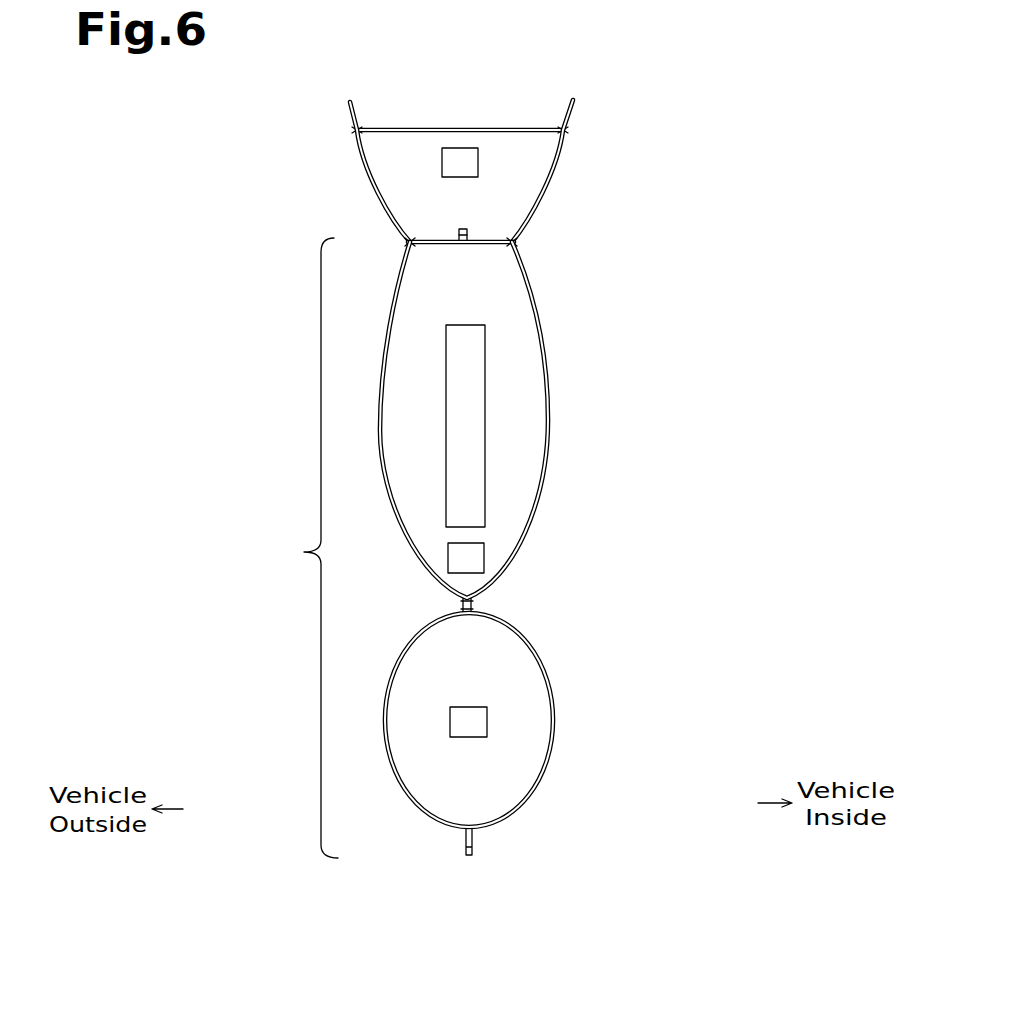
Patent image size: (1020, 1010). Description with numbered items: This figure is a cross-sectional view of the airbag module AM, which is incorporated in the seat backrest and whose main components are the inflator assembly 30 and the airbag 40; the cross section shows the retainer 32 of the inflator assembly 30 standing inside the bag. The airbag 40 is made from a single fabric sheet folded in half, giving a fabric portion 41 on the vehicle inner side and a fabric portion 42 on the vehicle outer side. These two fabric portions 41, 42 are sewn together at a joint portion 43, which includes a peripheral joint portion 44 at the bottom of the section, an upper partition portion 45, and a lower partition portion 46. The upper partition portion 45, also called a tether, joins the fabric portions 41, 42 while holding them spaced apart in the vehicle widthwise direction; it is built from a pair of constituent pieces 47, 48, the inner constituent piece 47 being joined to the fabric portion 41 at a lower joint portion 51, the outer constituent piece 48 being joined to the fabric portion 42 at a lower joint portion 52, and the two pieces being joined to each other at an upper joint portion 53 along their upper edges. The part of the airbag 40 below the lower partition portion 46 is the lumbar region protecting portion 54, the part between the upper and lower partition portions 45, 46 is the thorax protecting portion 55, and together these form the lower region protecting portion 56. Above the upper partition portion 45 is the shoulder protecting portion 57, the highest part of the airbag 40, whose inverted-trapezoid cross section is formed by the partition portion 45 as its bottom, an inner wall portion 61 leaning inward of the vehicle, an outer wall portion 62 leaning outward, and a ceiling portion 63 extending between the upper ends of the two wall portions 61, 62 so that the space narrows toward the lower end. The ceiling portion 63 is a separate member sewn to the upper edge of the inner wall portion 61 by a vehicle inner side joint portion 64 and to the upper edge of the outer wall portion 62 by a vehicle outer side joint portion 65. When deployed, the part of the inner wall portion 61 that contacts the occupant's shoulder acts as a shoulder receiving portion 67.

The airbag module AM is at (655, 410).
The inflator assembly 30 is at (492, 426).
The retainer 32 is at (485, 446).
The airbag 40 is at (467, 420).
The fabric portion 41 is at (546, 450).
The fabric portion 42 is at (388, 476).
The joint portion 43 is at (536, 535).
The peripheral joint portion 44 is at (478, 830).
The upper partition portion 45 is at (557, 233).
The lower partition portion 46 is at (526, 606).
The constituent piece 47 is at (488, 246).
The constituent piece 48 is at (440, 246).
The lower joint portion 51 is at (517, 243).
The lower joint portion 52 is at (409, 240).
The upper joint portion 53 is at (468, 231).
The lumbar region protecting portion 54 is at (469, 720).
The thorax protecting portion 55 is at (466, 558).
The lower region protecting portion 56 is at (300, 548).
The shoulder protecting portion 57 is at (460, 162).
The inner wall portion 61 is at (547, 180).
The outer wall portion 62 is at (373, 181).
The ceiling portion 63 is at (460, 127).
The vehicle inner side joint portion 64 is at (565, 130).
The vehicle outer side joint portion 65 is at (358, 130).
The shoulder receiving portion 67 is at (588, 171).